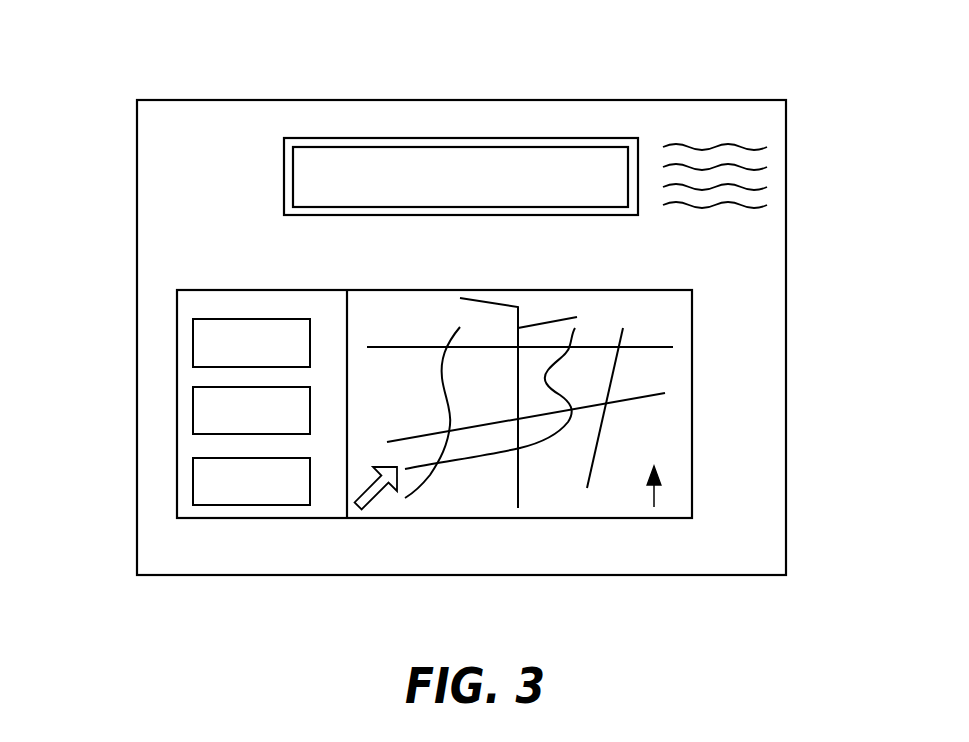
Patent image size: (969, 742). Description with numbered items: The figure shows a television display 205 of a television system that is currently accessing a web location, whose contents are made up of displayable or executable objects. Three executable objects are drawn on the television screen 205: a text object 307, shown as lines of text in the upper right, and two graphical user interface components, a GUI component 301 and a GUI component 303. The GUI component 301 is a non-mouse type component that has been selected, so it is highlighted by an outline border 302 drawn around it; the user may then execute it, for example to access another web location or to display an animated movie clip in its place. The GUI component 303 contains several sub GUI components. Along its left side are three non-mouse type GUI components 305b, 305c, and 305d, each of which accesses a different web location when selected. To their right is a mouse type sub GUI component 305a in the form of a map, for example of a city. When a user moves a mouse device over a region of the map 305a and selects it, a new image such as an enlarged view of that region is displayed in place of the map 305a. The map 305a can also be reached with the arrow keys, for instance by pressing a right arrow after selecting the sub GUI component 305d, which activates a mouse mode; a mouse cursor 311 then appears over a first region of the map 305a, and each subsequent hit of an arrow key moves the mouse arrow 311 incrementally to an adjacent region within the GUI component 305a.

The television display 205 is at (786, 320).
The GUI component 301 is at (597, 147).
The outline border 302 is at (433, 138).
The GUI component 303 is at (613, 518).
The mouse type sub GUI component 305a is at (683, 412).
The non-mouse type GUI component 305b is at (193, 345).
The non-mouse type GUI component 305c is at (193, 410).
The non-mouse type GUI component 305d is at (193, 483).
The text object 307 is at (740, 147).
The mouse cursor 311 is at (374, 502).